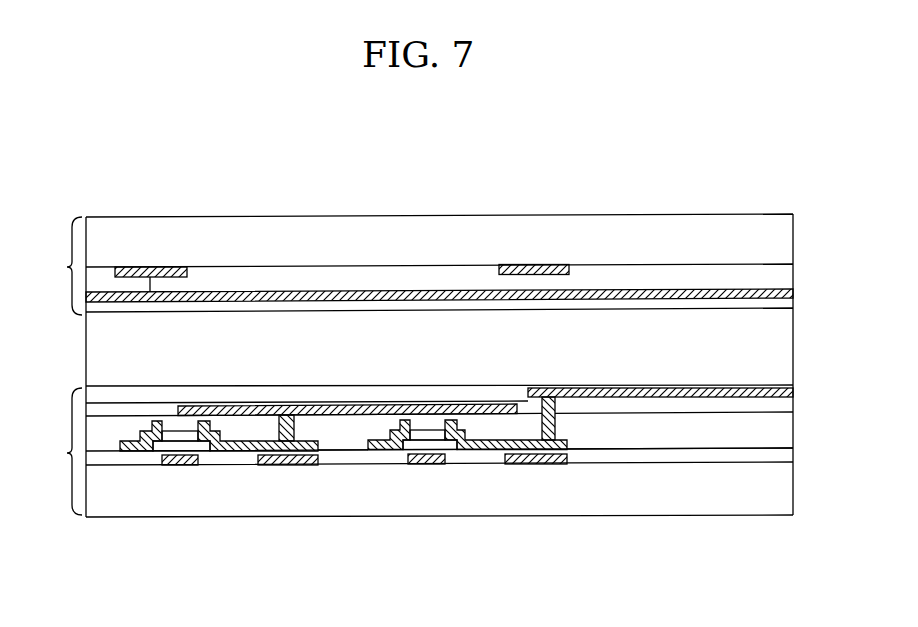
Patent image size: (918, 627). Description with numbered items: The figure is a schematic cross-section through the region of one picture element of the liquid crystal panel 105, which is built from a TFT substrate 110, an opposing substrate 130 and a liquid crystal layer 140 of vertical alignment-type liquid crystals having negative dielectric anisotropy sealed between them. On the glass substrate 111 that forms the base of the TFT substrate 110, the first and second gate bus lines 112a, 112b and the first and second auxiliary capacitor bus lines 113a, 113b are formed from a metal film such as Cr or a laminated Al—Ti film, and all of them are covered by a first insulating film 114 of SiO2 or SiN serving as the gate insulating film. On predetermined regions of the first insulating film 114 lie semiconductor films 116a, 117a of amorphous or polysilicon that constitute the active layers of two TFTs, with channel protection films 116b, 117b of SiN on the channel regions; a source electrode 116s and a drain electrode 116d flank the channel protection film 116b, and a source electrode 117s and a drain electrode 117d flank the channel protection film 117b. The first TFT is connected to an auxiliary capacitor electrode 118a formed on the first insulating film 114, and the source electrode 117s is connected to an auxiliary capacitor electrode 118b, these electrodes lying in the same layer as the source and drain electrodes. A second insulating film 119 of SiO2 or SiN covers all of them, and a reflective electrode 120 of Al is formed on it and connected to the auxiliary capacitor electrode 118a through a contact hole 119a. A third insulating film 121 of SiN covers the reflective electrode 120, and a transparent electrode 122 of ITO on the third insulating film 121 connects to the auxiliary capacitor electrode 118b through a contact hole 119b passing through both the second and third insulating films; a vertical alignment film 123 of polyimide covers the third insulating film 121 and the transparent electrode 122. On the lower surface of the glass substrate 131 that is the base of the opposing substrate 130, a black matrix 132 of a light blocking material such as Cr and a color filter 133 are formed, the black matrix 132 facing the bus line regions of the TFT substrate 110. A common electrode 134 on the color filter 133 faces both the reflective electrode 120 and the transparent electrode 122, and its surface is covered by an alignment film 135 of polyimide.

The liquid crystal panel 105 is at (756, 182).
The TFT substrate 110 is at (409, 451).
The glass substrate 111 is at (643, 505).
The first gate bus line 112a is at (182, 465).
The second gate bus line 112b is at (432, 464).
The first auxiliary capacitor bus line 113a is at (293, 465).
The second auxiliary capacitor bus line 113b is at (530, 464).
The first insulating film 114 is at (786, 455).
The semiconductor film 116a is at (158, 451).
The channel protection film 116b is at (175, 431).
The drain electrode 116d is at (137, 450).
The source electrode 116s is at (223, 451).
The semiconductor film 117a is at (404, 450).
The channel protection film 117b is at (428, 430).
The drain electrode 117d is at (383, 448).
The source electrode 117s is at (462, 448).
The auxiliary capacitor electrode 118a is at (318, 441).
The auxiliary capacitor electrode 118b is at (567, 440).
The second insulating film 119 is at (786, 424).
The contact hole 119a is at (291, 415).
The contact hole 119b is at (549, 397).
The reflective electrode 120 is at (240, 406).
The third insulating film 121 is at (786, 401).
The transparent electrode 122 is at (661, 388).
The vertical alignment film 123 is at (502, 385).
The opposing substrate 130 is at (409, 264).
The glass substrate 131 is at (665, 217).
The black matrix 132 is at (152, 267).
The color filter 133 is at (783, 278).
The common electrode 134 is at (787, 296).
The alignment film 135 is at (750, 302).
The liquid crystal layer 140 is at (86, 352).